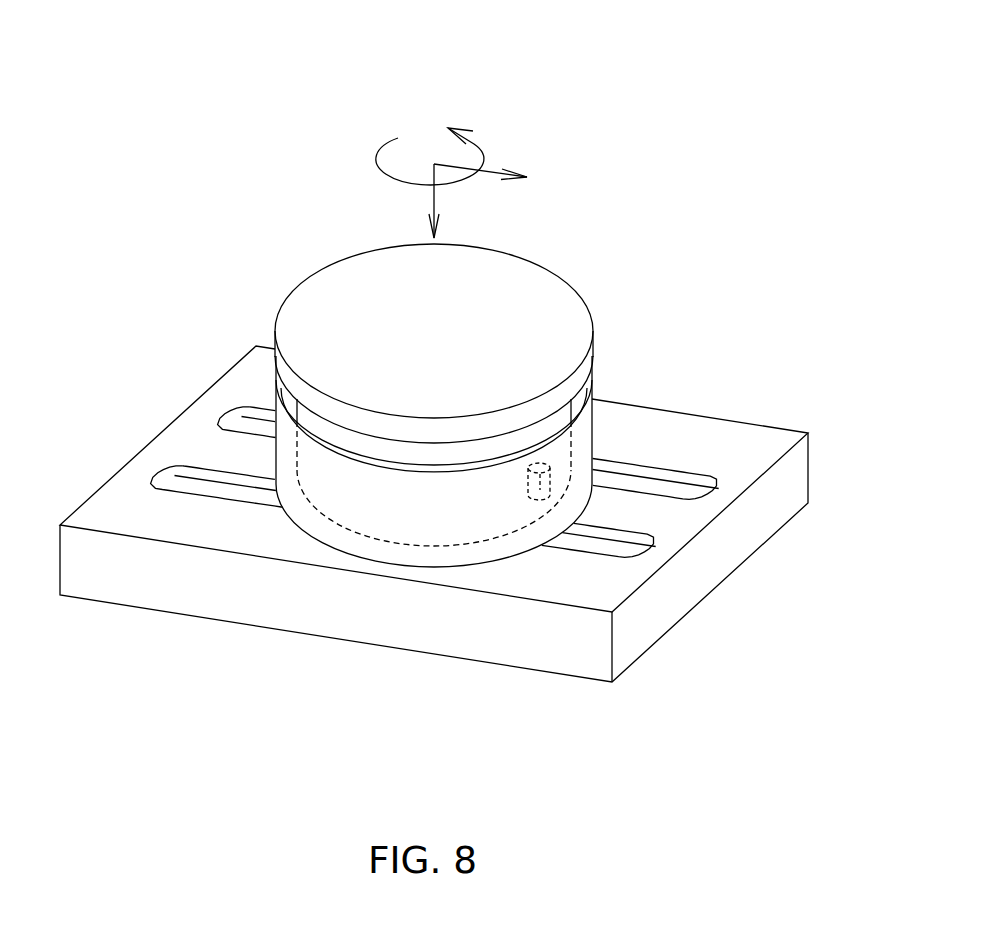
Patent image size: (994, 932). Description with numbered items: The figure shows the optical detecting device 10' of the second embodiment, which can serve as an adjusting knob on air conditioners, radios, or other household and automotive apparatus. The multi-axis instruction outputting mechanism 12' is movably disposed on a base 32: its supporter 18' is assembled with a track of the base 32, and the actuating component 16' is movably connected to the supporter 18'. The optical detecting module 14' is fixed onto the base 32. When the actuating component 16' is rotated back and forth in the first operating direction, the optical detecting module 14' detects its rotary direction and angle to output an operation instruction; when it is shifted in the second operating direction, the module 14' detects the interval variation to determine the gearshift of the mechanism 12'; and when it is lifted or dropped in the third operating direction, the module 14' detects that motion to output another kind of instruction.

The optical detecting device 10' is at (434, 375).
The multi-axis instruction outputting mechanism 12' is at (529, 405).
The optical detecting module 14' is at (509, 603).
The actuating component 16' is at (499, 343).
The supporter 18' is at (499, 449).
The base 32 is at (670, 598).